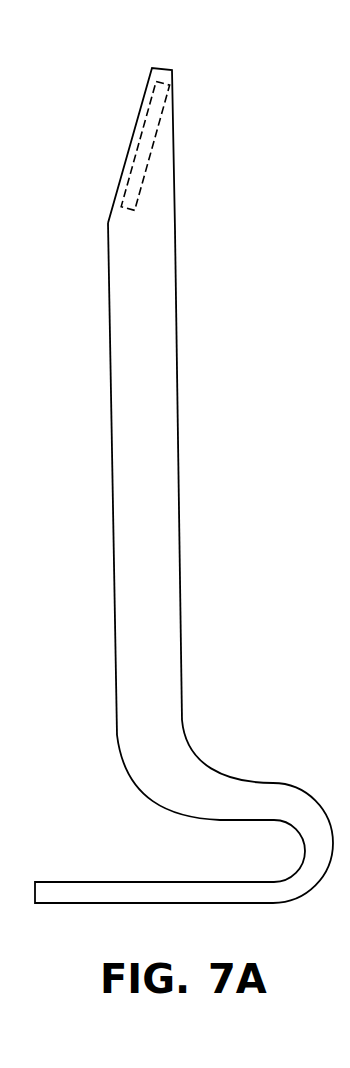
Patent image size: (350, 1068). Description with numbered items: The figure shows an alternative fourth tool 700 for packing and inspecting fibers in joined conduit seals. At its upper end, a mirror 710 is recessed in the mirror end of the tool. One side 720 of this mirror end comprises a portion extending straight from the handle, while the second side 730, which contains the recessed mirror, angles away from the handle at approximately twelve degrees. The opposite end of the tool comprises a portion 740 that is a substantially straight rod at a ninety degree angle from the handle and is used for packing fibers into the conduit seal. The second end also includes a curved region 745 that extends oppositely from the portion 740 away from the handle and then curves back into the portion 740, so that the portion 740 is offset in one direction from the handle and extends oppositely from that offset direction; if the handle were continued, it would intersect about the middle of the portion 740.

The alternative fourth tool 700 is at (245, 90).
The mirror 710 is at (145, 178).
The one side of the mirror end 720 is at (178, 160).
The second side of the mirror end 730 is at (131, 143).
The portion of the second end 740 is at (152, 881).
The curved bend 745 is at (267, 782).